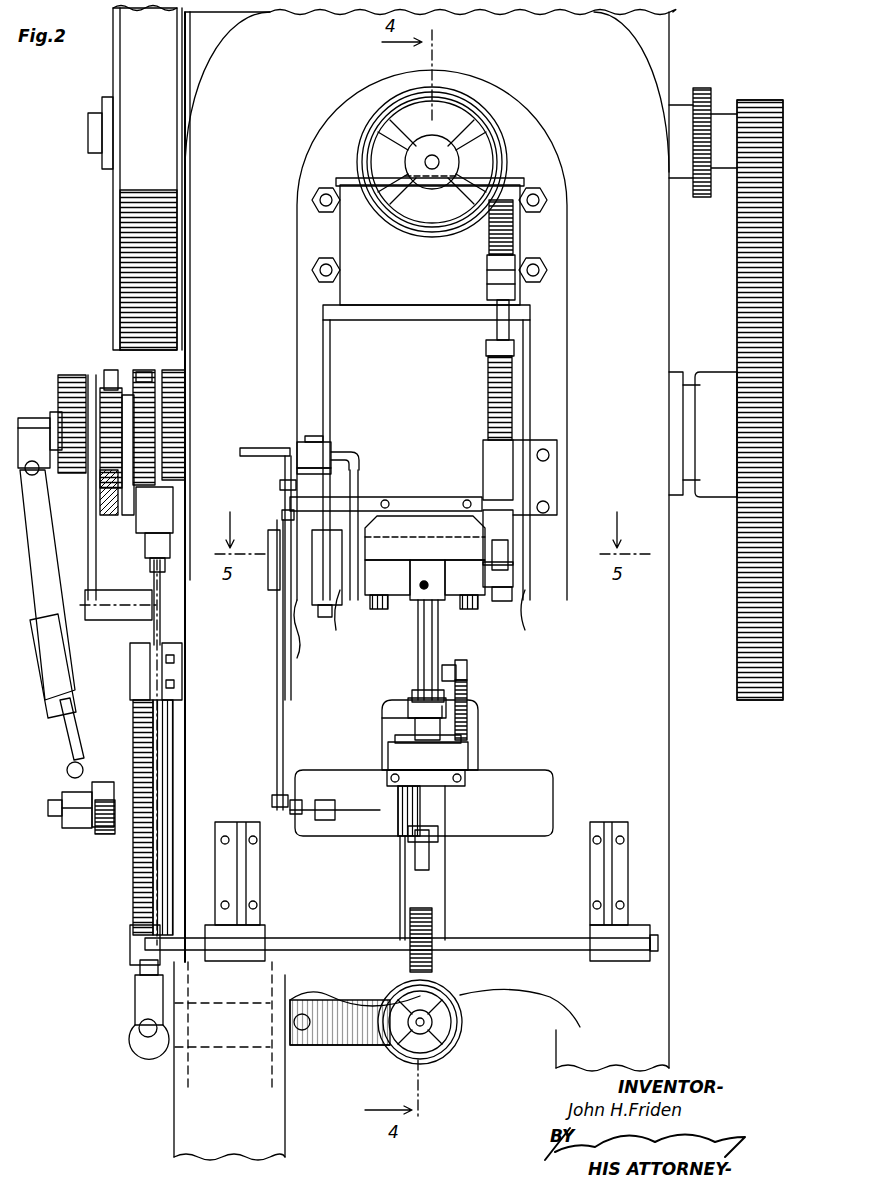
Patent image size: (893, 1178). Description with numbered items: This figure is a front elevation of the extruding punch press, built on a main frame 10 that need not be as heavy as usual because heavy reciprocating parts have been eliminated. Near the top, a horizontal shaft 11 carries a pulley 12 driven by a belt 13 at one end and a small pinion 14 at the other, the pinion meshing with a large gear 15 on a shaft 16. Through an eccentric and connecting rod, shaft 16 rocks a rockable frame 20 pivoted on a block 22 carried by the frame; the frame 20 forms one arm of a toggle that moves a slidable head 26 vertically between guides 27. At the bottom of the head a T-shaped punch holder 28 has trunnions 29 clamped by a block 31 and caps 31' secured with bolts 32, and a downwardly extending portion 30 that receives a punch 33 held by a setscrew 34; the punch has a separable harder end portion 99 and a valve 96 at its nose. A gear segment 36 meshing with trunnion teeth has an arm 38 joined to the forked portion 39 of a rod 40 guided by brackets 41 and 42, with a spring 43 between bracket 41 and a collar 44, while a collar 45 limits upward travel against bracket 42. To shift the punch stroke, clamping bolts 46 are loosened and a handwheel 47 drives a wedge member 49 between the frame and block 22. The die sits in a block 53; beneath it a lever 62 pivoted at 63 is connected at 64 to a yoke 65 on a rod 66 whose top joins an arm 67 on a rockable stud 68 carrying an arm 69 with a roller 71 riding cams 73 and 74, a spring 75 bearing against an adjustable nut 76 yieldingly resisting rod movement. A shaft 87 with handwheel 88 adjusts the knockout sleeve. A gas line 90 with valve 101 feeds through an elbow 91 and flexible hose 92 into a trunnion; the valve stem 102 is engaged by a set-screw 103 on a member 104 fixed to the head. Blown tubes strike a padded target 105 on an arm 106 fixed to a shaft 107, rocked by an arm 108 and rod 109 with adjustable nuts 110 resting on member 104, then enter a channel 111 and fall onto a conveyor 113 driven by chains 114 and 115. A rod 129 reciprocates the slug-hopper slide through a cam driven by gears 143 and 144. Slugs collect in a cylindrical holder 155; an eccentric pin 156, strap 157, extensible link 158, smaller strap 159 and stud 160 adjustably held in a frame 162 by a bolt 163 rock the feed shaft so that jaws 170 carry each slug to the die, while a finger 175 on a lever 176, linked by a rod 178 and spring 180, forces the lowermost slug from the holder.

The main frame 10 is at (670, 254).
The shaft 11 is at (88, 132).
The pulley 12 is at (113, 190).
The belt 13 is at (128, 66).
The pinion 14 is at (756, 100).
The gear 15 is at (739, 293).
The shaft 16 is at (698, 495).
The rockable frame 20 is at (400, 310).
The block 22 is at (340, 298).
The slidable head 26 is at (340, 361).
The guides 27 is at (415, 627).
The T-shaped punch holder 28 is at (448, 537).
The trunnions 29 is at (290, 574).
The downwardly extending portion 30 is at (412, 610).
The block 31 is at (425, 538).
The caps 31' is at (425, 577).
The bolts 32 is at (421, 614).
The punch 33 is at (420, 660).
The setscrew 34 is at (427, 570).
The segment 36 is at (500, 600).
The arm 38 is at (508, 553).
The forked portion 39 is at (513, 565).
The rod 40 is at (512, 334).
The bracket 41 is at (535, 472).
The bracket 42 is at (492, 265).
The spring 43 is at (488, 372).
The collar 44 is at (486, 348).
The collar 45 is at (490, 290).
The clamping bolts 46 is at (312, 206).
The handwheel 47 is at (498, 146).
The wedge member 49 is at (381, 178).
The block 53 is at (470, 752).
The lever 62 is at (356, 1045).
The pivot 63 is at (304, 1030).
The pivotal connection 64 is at (150, 1035).
The yoke 65 is at (135, 990).
The rod 66 is at (138, 885).
The arm 67 is at (173, 500).
The rockable shaft or stud 68 is at (108, 510).
The arm 69 is at (130, 420).
The roller 71 is at (105, 363).
The cam 73 is at (112, 370).
The cam 74 is at (148, 378).
The spring 75 is at (173, 738).
The adjustable nut 76 is at (130, 933).
The shaft 87 is at (430, 1030).
The handwheel 88 is at (455, 1028).
The gas line 90 is at (256, 448).
The elbow 91 is at (360, 455).
The flexible hose 92 is at (334, 579).
The valve 96 is at (448, 712).
The end portion 99 is at (408, 702).
The valve 101 is at (320, 445).
The stem 102 is at (358, 480).
The set-screw 103 is at (285, 520).
The member 104 is at (424, 497).
The target 105 is at (430, 855).
The arm 106 is at (420, 810).
The shaft 107 is at (352, 810).
The arm 108 is at (292, 812).
The rod 109 is at (277, 703).
The adjustable nuts 110 is at (280, 485).
The channel 111 is at (436, 887).
The travelling conveyor 113 is at (410, 912).
The chain 114 is at (80, 580).
The chain 115 is at (172, 636).
The rod 129 is at (340, 640).
The gear 143 is at (704, 88).
The gear 144 is at (693, 138).
The cylindrical holder 155 is at (415, 726).
The eccentric pin 156 is at (28, 419).
The strap 157 is at (48, 407).
The extensible link or rod 158 is at (58, 645).
The strap 159 is at (75, 812).
The stud 160 is at (50, 805).
The frame 162 is at (102, 782).
The bolt 163 is at (100, 832).
The jaws 170 is at (430, 743).
The finger 175 is at (414, 678).
The lever 176 is at (450, 665).
The rod 178 is at (467, 666).
The spring 180 is at (467, 690).